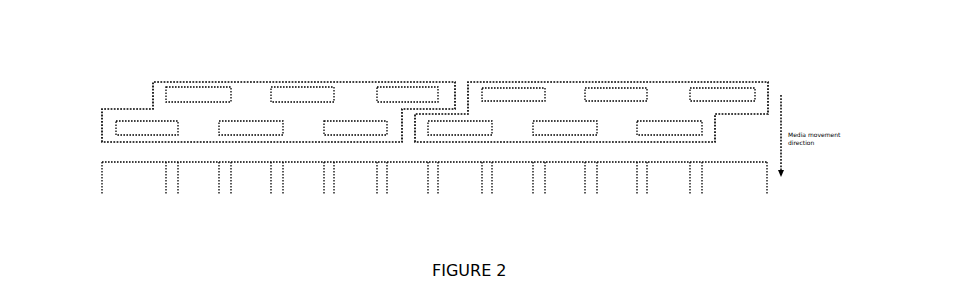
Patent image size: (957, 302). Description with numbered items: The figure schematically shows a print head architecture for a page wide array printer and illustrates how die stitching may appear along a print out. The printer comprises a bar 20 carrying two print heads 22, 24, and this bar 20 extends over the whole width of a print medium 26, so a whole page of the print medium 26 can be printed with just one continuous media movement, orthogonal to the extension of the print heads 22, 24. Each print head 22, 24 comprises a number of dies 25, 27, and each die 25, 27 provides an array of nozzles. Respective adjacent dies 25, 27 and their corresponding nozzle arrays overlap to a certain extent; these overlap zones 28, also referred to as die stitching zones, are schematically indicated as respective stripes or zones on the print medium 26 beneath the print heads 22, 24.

The bar 20 is at (130, 25).
The print head 22 is at (447, 92).
The print head 24 is at (760, 90).
The die 25 is at (182, 90).
The print medium 26 is at (750, 192).
The die 27 is at (122, 122).
The overlap zone 28 is at (172, 182).